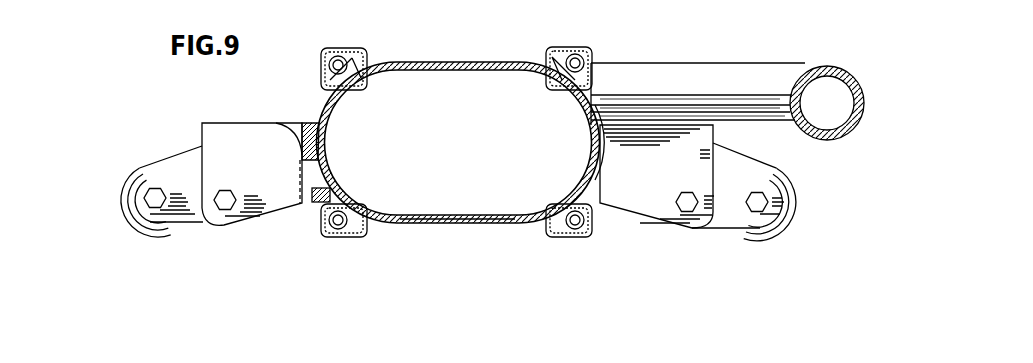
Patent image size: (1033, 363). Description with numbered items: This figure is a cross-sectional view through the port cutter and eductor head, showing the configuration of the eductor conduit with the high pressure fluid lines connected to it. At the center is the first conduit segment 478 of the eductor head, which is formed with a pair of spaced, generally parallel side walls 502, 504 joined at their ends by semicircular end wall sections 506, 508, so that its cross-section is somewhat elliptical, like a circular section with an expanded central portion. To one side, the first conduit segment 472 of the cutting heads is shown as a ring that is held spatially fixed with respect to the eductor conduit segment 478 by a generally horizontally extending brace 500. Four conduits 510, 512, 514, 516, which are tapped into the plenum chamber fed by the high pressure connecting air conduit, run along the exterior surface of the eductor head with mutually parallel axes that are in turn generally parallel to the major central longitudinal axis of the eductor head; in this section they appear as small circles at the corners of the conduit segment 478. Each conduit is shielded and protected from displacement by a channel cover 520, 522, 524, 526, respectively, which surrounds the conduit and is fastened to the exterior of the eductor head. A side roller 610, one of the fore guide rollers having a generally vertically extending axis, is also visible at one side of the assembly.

The first conduit segment of the cutting heads 472 is at (838, 68).
The first conduit segment of the eductor head 478 is at (449, 160).
The brace 500 is at (705, 80).
The side wall 502 is at (475, 61).
The side wall 504 is at (488, 224).
The semicircular end wall section 506 is at (593, 97).
The semicircular end wall section 508 is at (315, 118).
The conduit 510 is at (578, 237).
The conduit 512 is at (324, 233).
The conduit 514 is at (332, 48).
The conduit 516 is at (568, 49).
The channel cover 520 is at (556, 236).
The channel cover 522 is at (355, 236).
The channel cover 524 is at (347, 50).
The channel cover 526 is at (557, 48).
The side roller 610 is at (768, 237).